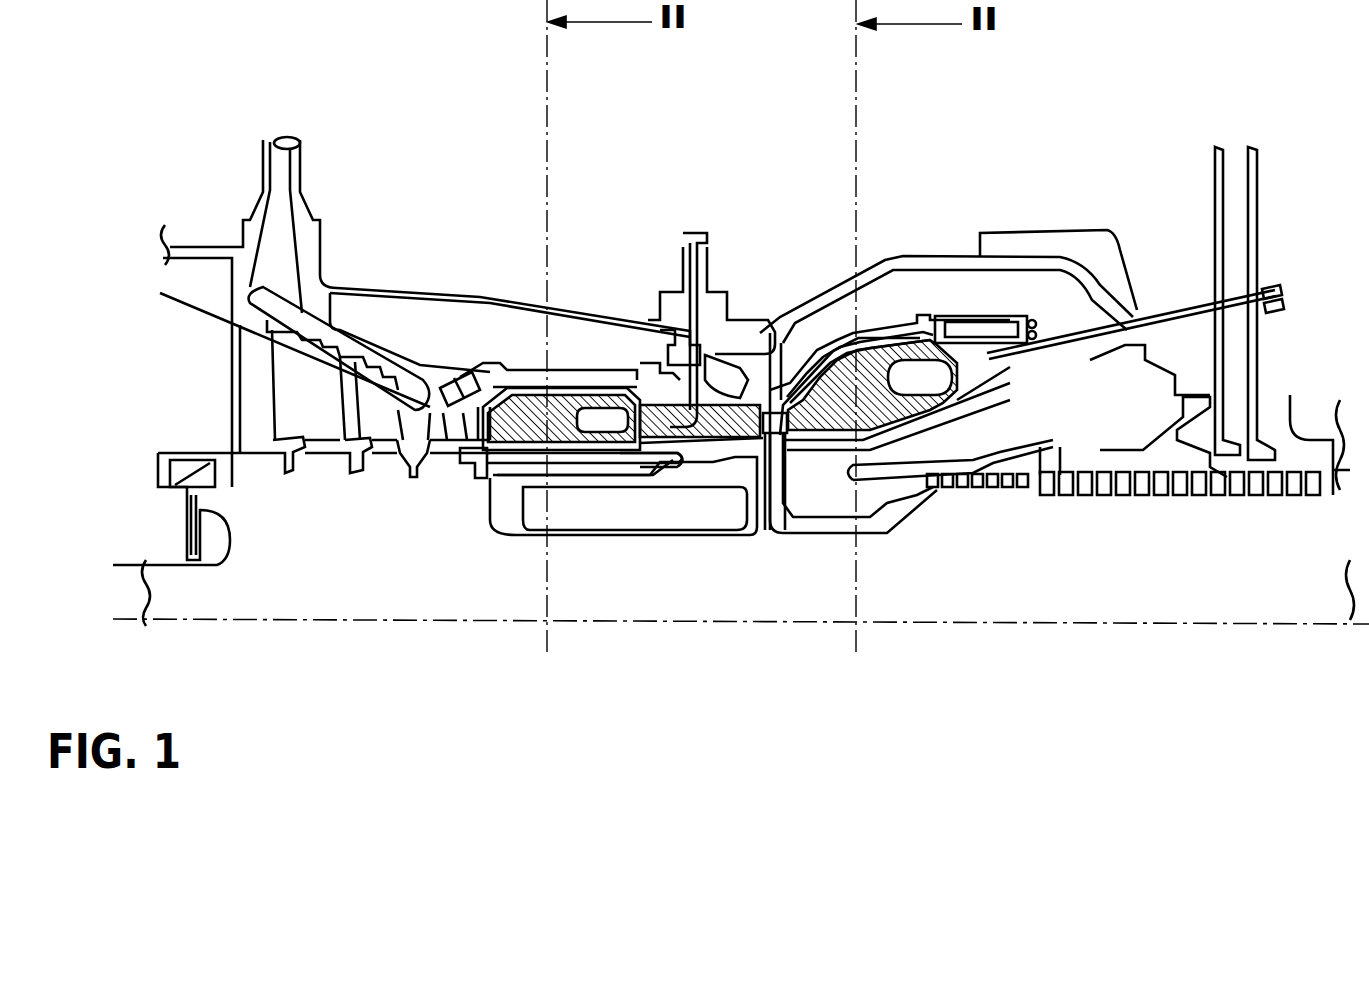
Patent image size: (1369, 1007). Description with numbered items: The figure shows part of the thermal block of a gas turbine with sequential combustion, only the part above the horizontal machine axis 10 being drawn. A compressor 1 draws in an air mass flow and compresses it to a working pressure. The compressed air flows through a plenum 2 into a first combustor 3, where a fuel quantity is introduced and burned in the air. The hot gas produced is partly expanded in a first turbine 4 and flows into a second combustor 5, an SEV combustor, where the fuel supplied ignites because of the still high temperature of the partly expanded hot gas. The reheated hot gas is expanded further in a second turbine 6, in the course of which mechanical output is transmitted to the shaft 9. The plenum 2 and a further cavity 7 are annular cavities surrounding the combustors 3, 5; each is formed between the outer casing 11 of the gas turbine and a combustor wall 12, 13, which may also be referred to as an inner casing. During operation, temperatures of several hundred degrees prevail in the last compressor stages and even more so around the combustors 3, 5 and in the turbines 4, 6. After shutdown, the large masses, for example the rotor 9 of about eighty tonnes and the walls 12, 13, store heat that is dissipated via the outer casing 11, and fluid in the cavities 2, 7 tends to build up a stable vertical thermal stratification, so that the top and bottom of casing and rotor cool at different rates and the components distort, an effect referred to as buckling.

The compressor 1 is at (1295, 470).
The plenum 2 is at (1005, 287).
The first combustor 3 is at (827, 410).
The first turbine 4 is at (776, 421).
The second combustor 5 is at (522, 418).
The second turbine 6 is at (368, 420).
The cavity 7 is at (560, 348).
The shaft 9 is at (395, 581).
The machine axis 10 is at (208, 619).
The outer casing 11 is at (450, 298).
The combustor wall 12 is at (891, 430).
The combustor wall 13 is at (625, 476).